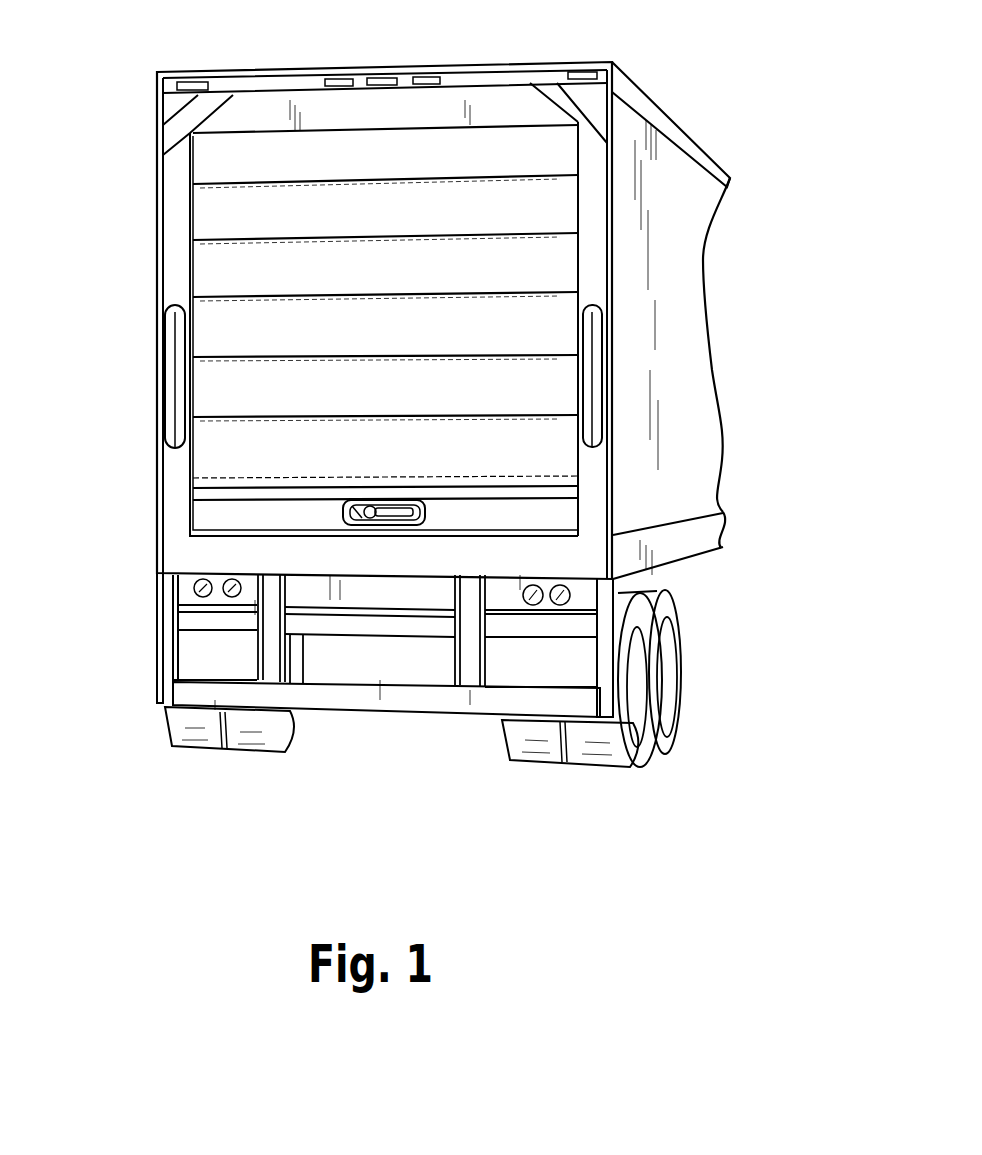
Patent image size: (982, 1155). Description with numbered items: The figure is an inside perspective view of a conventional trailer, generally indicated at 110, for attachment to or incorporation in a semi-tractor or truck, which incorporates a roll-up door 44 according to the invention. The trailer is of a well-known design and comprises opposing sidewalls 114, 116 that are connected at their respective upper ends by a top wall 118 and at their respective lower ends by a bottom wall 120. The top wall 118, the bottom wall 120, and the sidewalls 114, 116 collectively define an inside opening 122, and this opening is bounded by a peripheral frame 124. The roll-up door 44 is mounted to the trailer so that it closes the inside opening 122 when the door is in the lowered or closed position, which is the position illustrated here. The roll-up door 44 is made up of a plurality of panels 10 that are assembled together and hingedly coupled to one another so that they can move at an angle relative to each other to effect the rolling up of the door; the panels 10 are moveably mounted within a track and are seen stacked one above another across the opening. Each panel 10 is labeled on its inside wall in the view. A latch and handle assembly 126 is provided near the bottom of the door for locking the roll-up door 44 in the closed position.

The panels 10 is at (514, 531).
The roll-up door 44 is at (318, 222).
The trailer 110 is at (645, 90).
The sidewall 114 is at (153, 260).
The sidewall 116 is at (665, 287).
The top wall 118 is at (433, 65).
The bottom wall 120 is at (670, 563).
The inside opening 122 is at (577, 206).
The peripheral frame 124 is at (583, 520).
The latch and handle assembly 126 is at (405, 535).